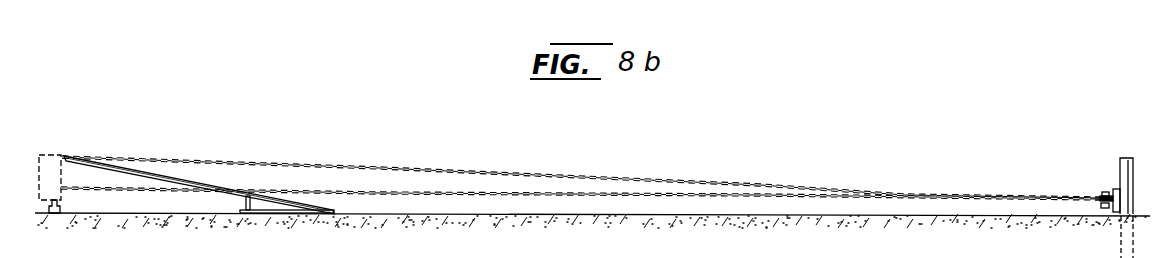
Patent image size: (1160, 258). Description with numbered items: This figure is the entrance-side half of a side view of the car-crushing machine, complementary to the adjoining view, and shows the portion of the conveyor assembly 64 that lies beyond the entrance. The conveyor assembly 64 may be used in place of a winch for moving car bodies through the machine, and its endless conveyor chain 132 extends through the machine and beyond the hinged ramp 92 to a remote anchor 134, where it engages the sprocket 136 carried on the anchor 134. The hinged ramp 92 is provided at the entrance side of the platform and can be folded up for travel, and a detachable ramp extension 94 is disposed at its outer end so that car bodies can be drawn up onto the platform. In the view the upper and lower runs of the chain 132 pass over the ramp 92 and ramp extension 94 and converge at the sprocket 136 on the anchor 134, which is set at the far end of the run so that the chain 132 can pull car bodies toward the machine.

The endless conveyor chain 132 is at (183, 160).
The conveyor assembly 64 is at (291, 160).
The hinged ramp 92 is at (210, 184).
The detachable ramp extension 94 is at (312, 210).
The remote anchor 134 is at (1118, 159).
The sprocket 136 is at (1114, 210).